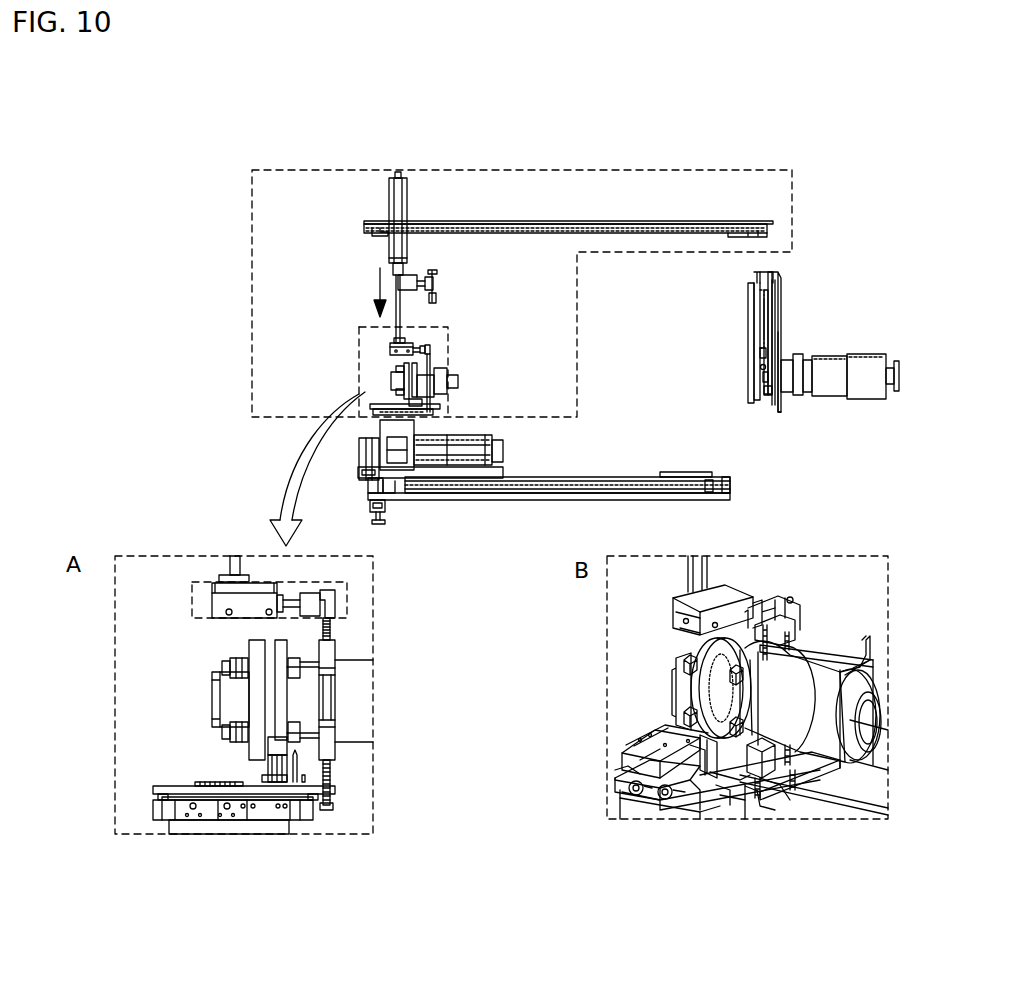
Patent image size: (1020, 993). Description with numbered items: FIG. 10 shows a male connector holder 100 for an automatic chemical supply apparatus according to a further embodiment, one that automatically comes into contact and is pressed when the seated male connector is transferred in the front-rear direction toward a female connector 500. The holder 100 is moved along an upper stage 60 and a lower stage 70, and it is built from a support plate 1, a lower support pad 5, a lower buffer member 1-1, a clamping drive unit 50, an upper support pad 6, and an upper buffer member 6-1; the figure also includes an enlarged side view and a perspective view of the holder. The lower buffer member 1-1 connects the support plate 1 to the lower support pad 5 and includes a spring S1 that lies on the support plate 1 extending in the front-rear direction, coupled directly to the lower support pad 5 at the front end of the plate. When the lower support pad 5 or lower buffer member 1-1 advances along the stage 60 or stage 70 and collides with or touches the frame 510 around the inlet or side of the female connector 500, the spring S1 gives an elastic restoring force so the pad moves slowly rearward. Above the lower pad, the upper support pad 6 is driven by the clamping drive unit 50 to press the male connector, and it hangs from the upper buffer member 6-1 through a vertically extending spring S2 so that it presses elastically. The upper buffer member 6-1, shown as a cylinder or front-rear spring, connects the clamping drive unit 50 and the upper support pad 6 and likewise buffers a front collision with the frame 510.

The male connector holder 100 is at (806, 211).
The upper stage 60 is at (596, 222).
The clamping drive unit 50 is at (388, 242).
The lower stage 70 is at (574, 478).
The female connector 500 is at (832, 356).
The frame 510 is at (755, 320).
The upper buffer member 6-1 is at (193, 606).
The spring S2 is at (331, 632).
The upper support pad 6 is at (336, 650).
The lower support pad 5 is at (336, 750).
The spring S1 is at (253, 792).
The lower buffer member 1-1 is at (153, 788).
The support plate 1 is at (153, 808).